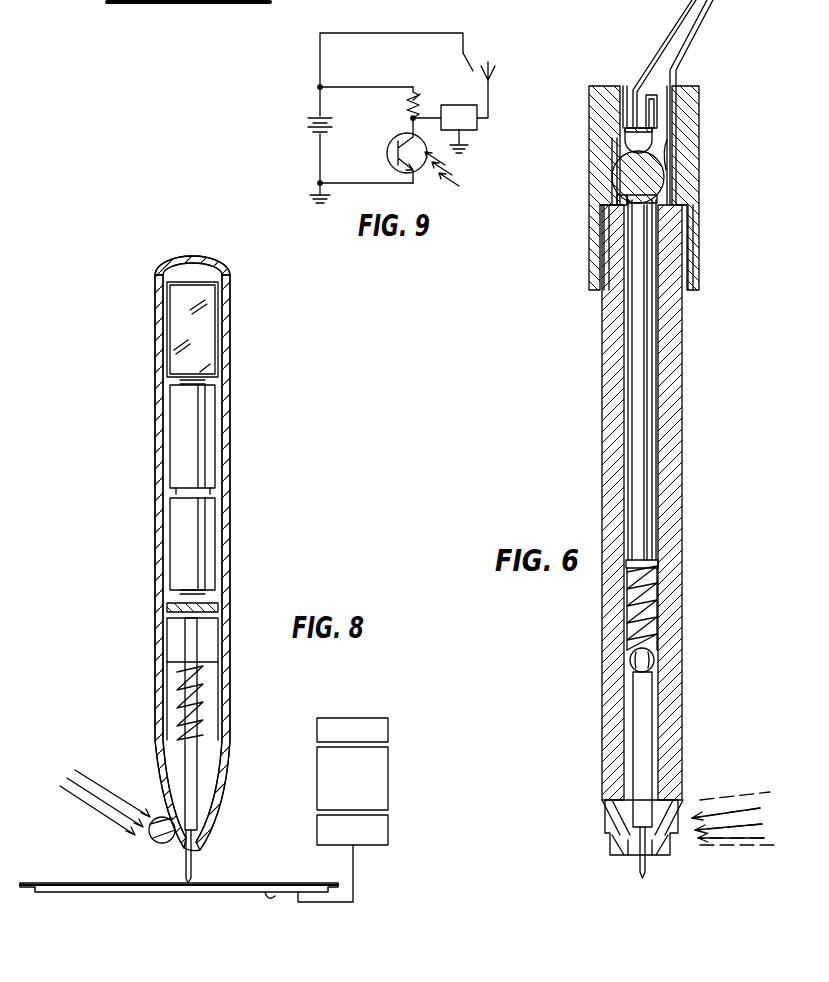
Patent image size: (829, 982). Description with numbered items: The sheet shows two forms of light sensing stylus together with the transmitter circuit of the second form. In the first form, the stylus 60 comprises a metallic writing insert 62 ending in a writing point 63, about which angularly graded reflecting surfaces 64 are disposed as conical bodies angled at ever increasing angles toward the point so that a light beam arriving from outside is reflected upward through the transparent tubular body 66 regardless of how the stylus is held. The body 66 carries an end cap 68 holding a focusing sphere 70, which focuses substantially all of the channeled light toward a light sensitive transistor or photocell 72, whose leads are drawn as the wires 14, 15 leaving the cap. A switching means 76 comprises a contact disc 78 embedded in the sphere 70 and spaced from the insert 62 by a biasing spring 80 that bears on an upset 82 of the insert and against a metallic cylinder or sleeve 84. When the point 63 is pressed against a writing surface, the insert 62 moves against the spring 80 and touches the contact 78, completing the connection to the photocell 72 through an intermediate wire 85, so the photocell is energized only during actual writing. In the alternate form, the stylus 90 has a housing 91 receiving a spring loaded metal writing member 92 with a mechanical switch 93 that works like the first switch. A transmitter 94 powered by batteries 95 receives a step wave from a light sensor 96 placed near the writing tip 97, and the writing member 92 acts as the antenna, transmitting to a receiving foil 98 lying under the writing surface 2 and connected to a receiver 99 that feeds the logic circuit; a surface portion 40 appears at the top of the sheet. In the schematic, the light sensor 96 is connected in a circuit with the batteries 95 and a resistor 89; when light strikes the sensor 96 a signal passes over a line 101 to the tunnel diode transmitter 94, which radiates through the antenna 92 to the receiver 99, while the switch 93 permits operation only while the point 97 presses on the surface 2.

In FIG. 8, the writing surface 2 is at (118, 883).
In FIG. 6, the conductor wire 14 is at (670, 20).
In FIG. 6, the conductor wire 15 is at (700, 22).
In FIG. 8, the tablet surface 40 is at (168, 16).
In FIG. 6, the light sensing stylus 60 is at (588, 443).
In FIG. 6, the writing insert 62 is at (642, 722).
In FIG. 6, the writing point 63 is at (645, 878).
In FIG. 6, the angularly graded reflecting surfaces 64 is at (605, 835).
In FIG. 6, the transparent tubular body 66 is at (612, 702).
In FIG. 6, the end cap 68 is at (697, 200).
In FIG. 6, the focusing sphere 70 is at (628, 170).
In FIG. 6, the light sensitive transistor or photocell 72 is at (625, 136).
In FIG. 6, the switching means 76 is at (690, 157).
In FIG. 6, the contact disc 78 is at (614, 193).
In FIG. 6, the biasing spring 80 is at (660, 602).
In FIG. 6, the upset 82 is at (656, 660).
In FIG. 6, the metallic cylinder or sleeve 84 is at (658, 534).
In FIG. 6, the intermediate wire 85 is at (668, 100).
In FIG. 9, the resistor 89 is at (411, 104).
In FIG. 8, the light sensing stylus 90 is at (232, 486).
In FIG. 8, the housing 91 is at (248, 666).
In FIG. 9, the writing member 92 is at (490, 83).
In FIG. 8, the writing member 92 is at (195, 768).
In FIG. 9, the mechanical switch 93 is at (475, 52).
In FIG. 8, the mechanical switch 93 is at (178, 645).
In FIG. 9, the transmitter 94 is at (462, 116).
In FIG. 8, the transmitter 94 is at (200, 322).
In FIG. 9, the batteries 95 is at (312, 125).
In FIG. 8, the batteries 95 is at (205, 430).
In FIG. 9, the light sensor 96 is at (390, 160).
In FIG. 8, the light sensor 96 is at (152, 818).
In FIG. 8, the writing tip 97 is at (198, 878).
In FIG. 8, the foil 98 is at (300, 862).
In FIG. 8, the receiver 99 is at (320, 830).
In FIG. 9, the line 101 is at (420, 94).